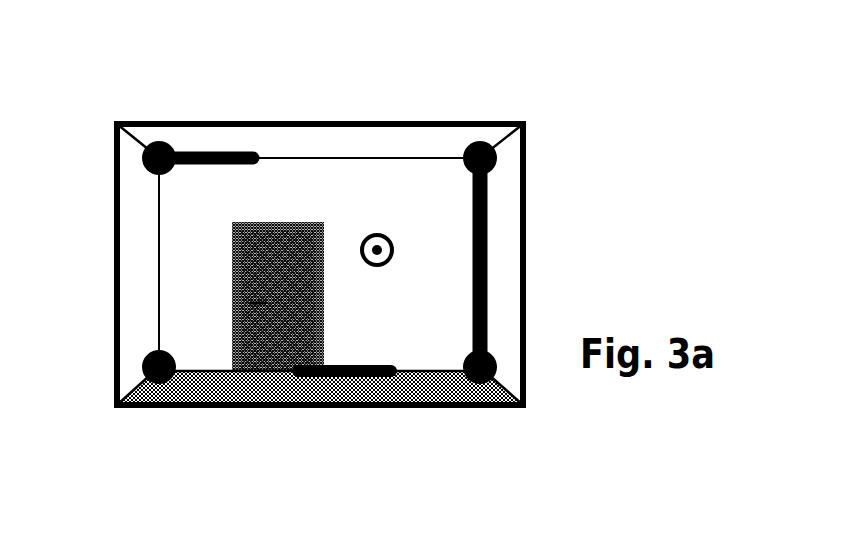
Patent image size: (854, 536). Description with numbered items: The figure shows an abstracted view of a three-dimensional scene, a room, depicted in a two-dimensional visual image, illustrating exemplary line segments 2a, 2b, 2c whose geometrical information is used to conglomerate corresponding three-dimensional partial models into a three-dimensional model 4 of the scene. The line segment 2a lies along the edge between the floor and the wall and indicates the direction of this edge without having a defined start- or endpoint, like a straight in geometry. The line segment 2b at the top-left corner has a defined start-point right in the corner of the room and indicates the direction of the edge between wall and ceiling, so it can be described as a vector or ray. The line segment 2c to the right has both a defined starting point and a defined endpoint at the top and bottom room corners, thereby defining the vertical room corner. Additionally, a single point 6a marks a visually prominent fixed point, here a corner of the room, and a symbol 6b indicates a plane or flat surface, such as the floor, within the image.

The 3D-model 4 is at (54, 139).
The line segment 2a is at (345, 376).
The line segment 2b is at (205, 153).
The line segment 2c is at (488, 265).
The single point 6a is at (155, 375).
The plane symbol 6b is at (377, 234).